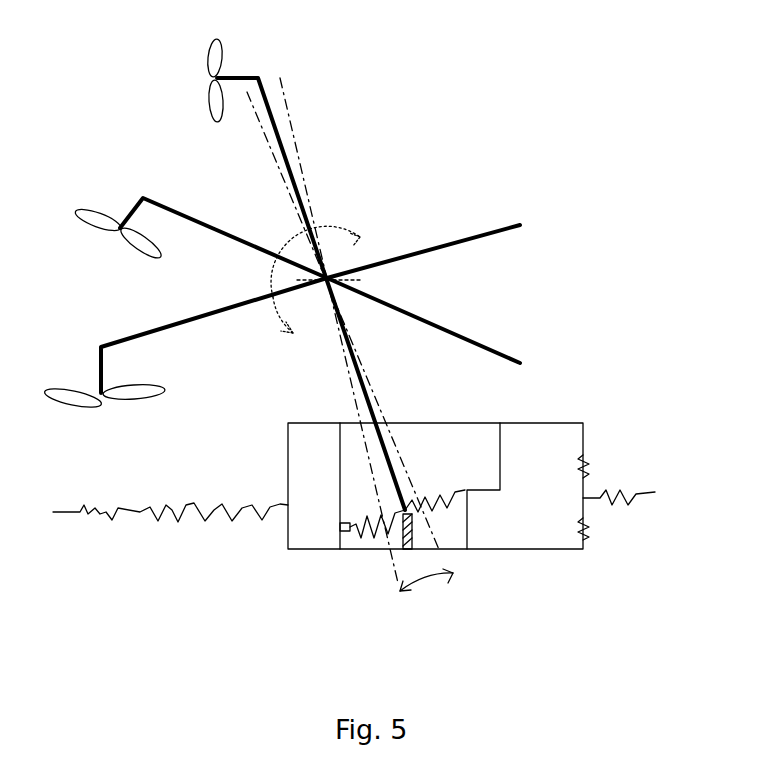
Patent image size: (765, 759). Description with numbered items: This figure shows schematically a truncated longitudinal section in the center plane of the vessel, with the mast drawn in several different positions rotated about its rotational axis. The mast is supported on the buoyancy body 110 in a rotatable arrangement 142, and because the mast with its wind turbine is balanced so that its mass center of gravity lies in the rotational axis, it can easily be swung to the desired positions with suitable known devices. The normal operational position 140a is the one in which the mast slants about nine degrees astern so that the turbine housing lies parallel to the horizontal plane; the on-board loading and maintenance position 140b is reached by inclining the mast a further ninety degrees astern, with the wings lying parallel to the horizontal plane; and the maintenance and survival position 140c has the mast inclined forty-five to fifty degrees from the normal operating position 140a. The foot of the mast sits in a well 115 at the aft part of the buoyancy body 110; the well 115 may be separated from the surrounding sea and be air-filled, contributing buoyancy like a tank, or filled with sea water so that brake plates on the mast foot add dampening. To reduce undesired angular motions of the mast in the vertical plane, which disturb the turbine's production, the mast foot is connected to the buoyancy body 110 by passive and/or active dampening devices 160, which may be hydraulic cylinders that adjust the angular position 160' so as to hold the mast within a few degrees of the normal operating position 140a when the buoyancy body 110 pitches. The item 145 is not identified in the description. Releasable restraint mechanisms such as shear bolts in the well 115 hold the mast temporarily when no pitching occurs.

The normal operational position 140a is at (280, 132).
The on-board loading and maintenance position 140b is at (472, 217).
The survival position 140c is at (488, 329).
The rotatable arrangement 142 is at (400, 197).
The well 115 is at (463, 450).
The buoyancy body 110 is at (533, 522).
The spring element 145 is at (408, 535).
The dampening devices 160 is at (335, 583).
The angular position 160' is at (447, 624).